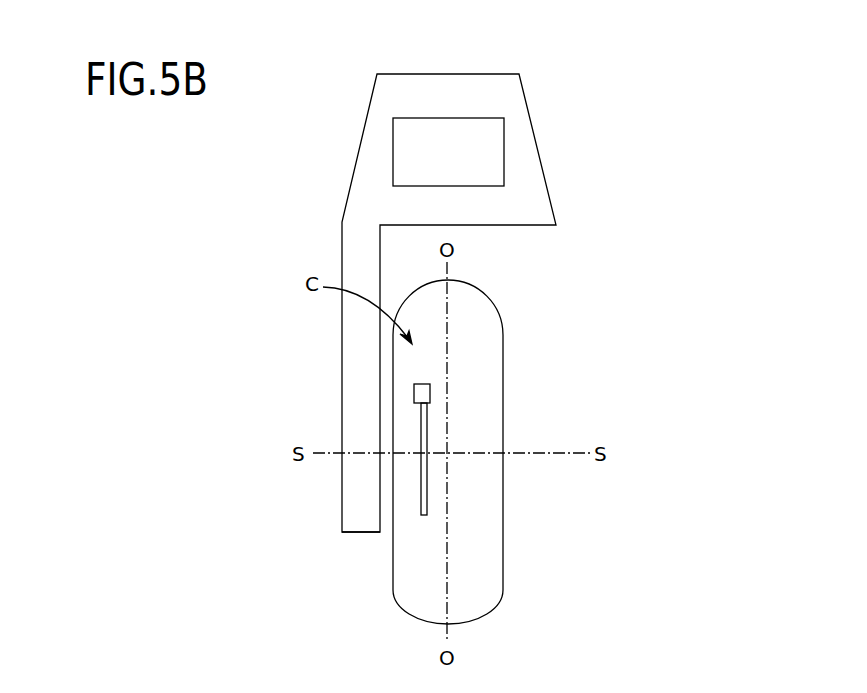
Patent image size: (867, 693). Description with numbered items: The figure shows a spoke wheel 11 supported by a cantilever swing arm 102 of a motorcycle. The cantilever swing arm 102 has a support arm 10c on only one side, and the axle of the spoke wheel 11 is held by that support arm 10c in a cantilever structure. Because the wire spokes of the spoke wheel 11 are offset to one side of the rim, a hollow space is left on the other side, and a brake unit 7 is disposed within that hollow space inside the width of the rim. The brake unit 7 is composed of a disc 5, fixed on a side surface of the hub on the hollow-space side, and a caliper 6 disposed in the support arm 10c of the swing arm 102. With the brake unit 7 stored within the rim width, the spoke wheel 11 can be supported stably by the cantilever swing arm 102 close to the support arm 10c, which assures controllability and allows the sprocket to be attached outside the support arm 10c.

The cantilever swing arm 102 is at (548, 82).
The support arm 10c is at (342, 518).
The spoke wheel 11 is at (511, 323).
The brake unit 7 is at (347, 429).
The caliper 6 is at (414, 388).
The disc 5 is at (421, 423).